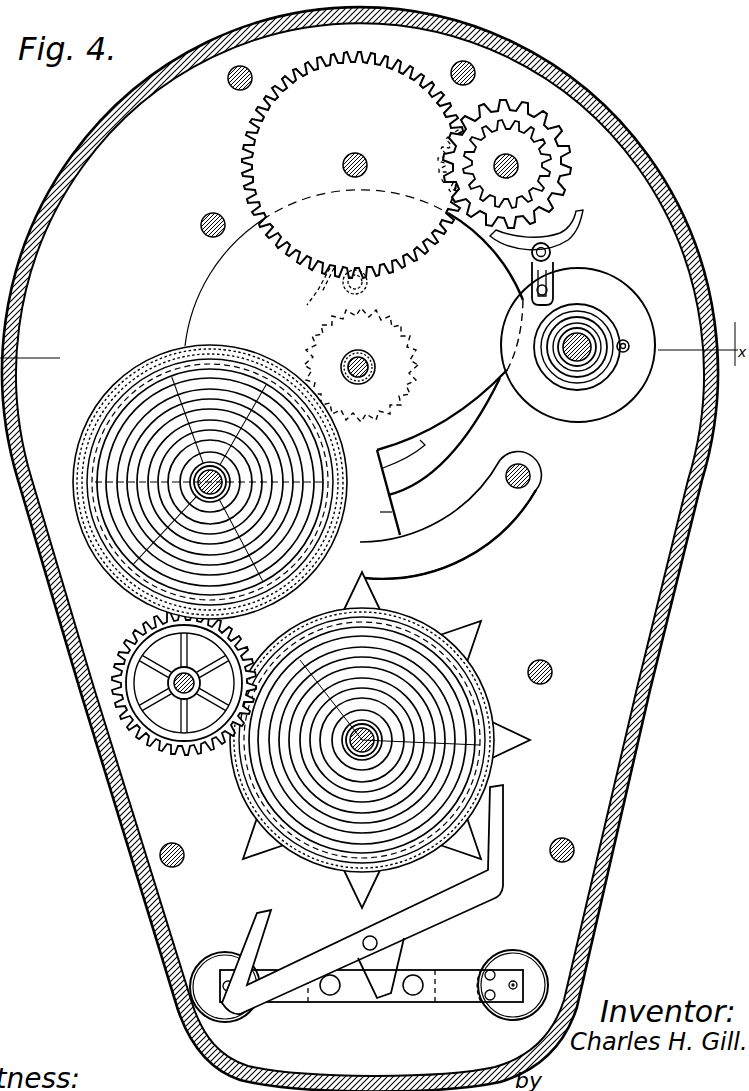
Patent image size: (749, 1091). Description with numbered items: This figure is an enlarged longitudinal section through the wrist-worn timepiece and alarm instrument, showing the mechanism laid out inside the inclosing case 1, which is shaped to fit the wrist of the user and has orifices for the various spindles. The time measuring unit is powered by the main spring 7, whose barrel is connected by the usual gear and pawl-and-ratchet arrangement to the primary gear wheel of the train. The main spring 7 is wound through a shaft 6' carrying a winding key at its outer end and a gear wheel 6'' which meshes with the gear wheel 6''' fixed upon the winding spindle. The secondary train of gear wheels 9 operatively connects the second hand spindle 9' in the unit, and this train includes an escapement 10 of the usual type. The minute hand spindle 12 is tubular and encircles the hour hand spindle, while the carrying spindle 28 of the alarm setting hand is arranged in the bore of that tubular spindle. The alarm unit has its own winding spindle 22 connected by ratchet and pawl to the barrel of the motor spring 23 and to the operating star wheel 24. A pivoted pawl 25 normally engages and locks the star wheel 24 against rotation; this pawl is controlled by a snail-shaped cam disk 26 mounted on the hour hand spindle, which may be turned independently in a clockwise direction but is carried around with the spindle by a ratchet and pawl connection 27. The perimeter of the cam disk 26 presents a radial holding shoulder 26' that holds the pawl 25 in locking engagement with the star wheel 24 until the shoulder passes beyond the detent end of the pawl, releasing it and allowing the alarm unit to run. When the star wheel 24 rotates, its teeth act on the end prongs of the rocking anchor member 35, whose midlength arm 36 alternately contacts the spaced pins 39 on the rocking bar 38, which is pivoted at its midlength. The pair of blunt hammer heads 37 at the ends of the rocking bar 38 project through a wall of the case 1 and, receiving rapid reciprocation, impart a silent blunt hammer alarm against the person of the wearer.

The inclosing case 1 is at (94, 145).
The secondary train of gear wheels 9 is at (338, 165).
The second hand spindle 9' is at (368, 156).
The escapement 10 is at (566, 208).
The minute hand spindle 12 is at (364, 373).
The ratchet and pawl connection 27 is at (350, 300).
The carrying spindle of the alarm setting hand 28 is at (350, 366).
The main spring 7 is at (130, 457).
The shaft 6' is at (210, 485).
The gear wheel 6'' is at (210, 500).
The gear wheel 6''' is at (190, 482).
The winding spindle of the alarm unit 22 is at (440, 728).
The motor spring 23 is at (286, 798).
The star wheel 24 is at (262, 857).
The pivoted pawl 25 is at (477, 537).
The cam disk 26 is at (448, 452).
The radial holding shoulder 26' is at (411, 515).
The rocking anchor member 35 is at (310, 960).
The arm 36 is at (395, 962).
The blunt hammer heads 37 is at (513, 953).
The rocking bar 38 is at (458, 1003).
The spaced pins 39 is at (413, 996).